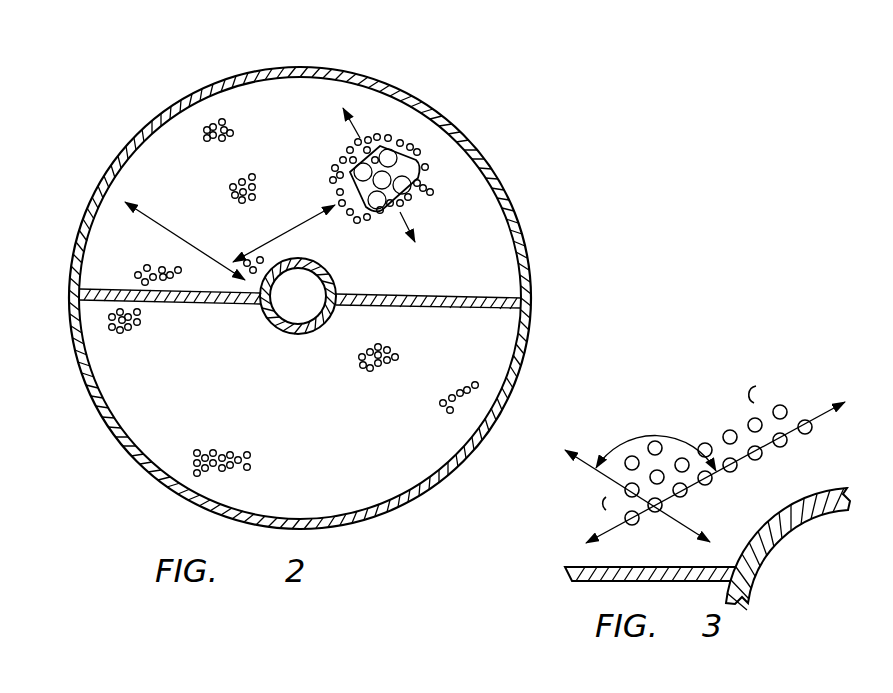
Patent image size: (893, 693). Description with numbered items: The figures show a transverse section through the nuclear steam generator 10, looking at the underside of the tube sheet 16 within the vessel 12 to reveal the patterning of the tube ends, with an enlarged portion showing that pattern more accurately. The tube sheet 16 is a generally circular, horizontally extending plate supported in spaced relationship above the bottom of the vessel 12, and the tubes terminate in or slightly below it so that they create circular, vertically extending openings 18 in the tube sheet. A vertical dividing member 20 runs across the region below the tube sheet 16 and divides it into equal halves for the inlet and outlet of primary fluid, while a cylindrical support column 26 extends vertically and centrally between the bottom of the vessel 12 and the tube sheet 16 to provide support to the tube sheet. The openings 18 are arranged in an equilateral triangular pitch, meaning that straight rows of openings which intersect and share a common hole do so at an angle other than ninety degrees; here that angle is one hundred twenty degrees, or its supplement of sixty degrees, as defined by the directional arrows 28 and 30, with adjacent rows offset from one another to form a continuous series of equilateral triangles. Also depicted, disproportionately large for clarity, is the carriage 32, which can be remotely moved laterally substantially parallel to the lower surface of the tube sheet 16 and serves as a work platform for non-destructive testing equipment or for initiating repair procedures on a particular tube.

In FIG. 2, the nuclear steam generator 10 is at (282, 282).
In FIG. 2, the vessel 12 is at (224, 80).
In FIG. 2, the tube sheet 16 is at (100, 230).
In FIG. 3, the tube sheet 16 is at (568, 534).
In FIG. 2, the openings 18 is at (229, 126).
In FIG. 3, the openings 18 is at (770, 414).
In FIG. 2, the dividing member 20 is at (502, 297).
In FIG. 3, the dividing member 20 is at (660, 567).
In FIG. 2, the support column 26 is at (272, 327).
In FIG. 3, the support column 26 is at (768, 524).
In FIG. 2, the directional arrow 28 is at (149, 198).
In FIG. 3, the directional arrow 28 is at (579, 460).
In FIG. 2, the directional arrow 30 is at (298, 228).
In FIG. 3, the directional arrow 30 is at (822, 414).
In FIG. 2, the carriage 32 is at (417, 167).